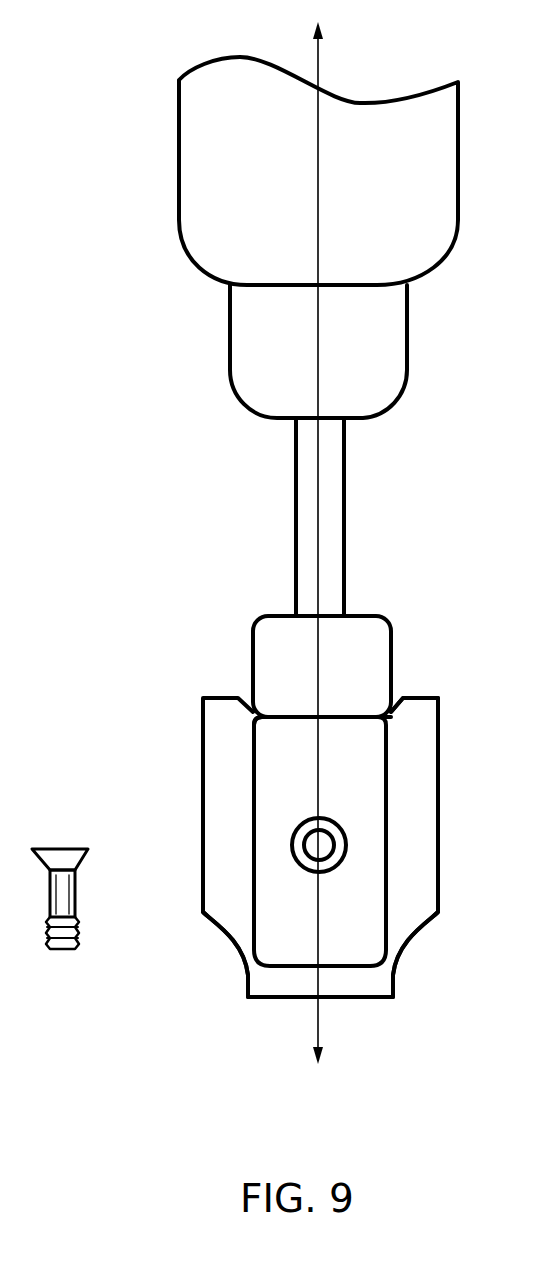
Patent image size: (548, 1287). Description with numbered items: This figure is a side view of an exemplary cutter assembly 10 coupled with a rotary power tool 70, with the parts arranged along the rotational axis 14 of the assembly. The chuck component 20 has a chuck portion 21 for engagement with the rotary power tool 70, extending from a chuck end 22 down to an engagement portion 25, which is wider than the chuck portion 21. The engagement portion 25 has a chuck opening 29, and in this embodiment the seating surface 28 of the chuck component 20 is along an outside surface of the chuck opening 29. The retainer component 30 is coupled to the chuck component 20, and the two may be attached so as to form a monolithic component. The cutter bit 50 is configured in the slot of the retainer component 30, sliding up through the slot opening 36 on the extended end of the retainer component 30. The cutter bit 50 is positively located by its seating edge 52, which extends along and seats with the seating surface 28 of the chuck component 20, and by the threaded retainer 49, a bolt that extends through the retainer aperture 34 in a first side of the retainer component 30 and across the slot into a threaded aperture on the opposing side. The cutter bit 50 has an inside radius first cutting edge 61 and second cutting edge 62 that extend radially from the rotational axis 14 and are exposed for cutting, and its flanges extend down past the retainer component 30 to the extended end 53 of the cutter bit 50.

The cutter assembly 10 is at (108, 82).
The rotational axis 14 is at (317, 1033).
The rotary power tool 70 is at (248, 338).
The chuck component 20 is at (308, 517).
The chuck portion 21 is at (307, 452).
The chuck end 22 is at (345, 422).
The engagement portion 25 is at (285, 648).
The seating edge 52 is at (378, 717).
The seating surface 28 is at (383, 718).
The retainer component 30 is at (272, 772).
The chuck opening 29 is at (272, 723).
The cutter bit 50 is at (400, 803).
The retainer aperture 34 is at (345, 834).
The threaded retainer 49 is at (53, 857).
The second cutting edge 62 is at (240, 945).
The first cutting edge 61 is at (407, 927).
The slot opening 36 is at (353, 968).
The extended end 53 is at (378, 998).